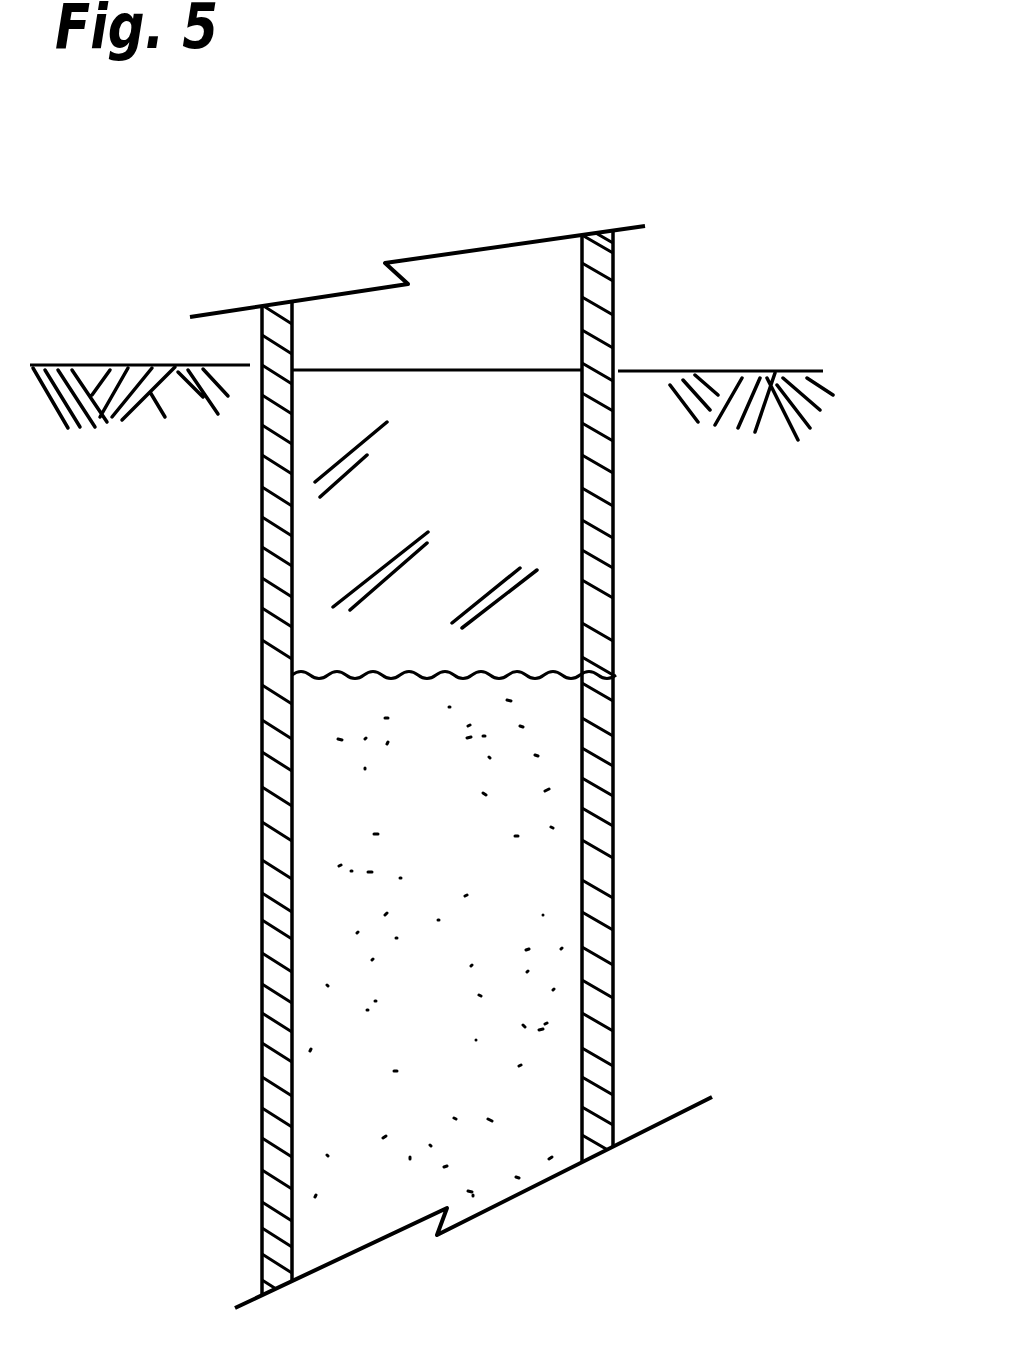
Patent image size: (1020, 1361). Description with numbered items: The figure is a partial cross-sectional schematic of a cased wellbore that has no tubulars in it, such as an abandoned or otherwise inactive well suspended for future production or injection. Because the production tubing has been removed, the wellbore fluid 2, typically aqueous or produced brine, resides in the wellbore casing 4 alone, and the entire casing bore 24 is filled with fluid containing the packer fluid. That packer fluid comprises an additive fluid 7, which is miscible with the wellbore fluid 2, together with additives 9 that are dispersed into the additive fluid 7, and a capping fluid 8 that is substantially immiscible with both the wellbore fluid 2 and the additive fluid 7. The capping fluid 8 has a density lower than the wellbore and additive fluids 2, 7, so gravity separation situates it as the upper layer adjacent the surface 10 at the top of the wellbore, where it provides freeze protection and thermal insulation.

The wellbore casing 4 is at (262, 930).
The casing bore 24 is at (585, 432).
The surface 10 is at (773, 377).
The capping fluid 8 is at (560, 560).
The wellbore fluid 2 is at (540, 882).
The additive fluid 7 is at (542, 942).
The additives 9 is at (565, 946).